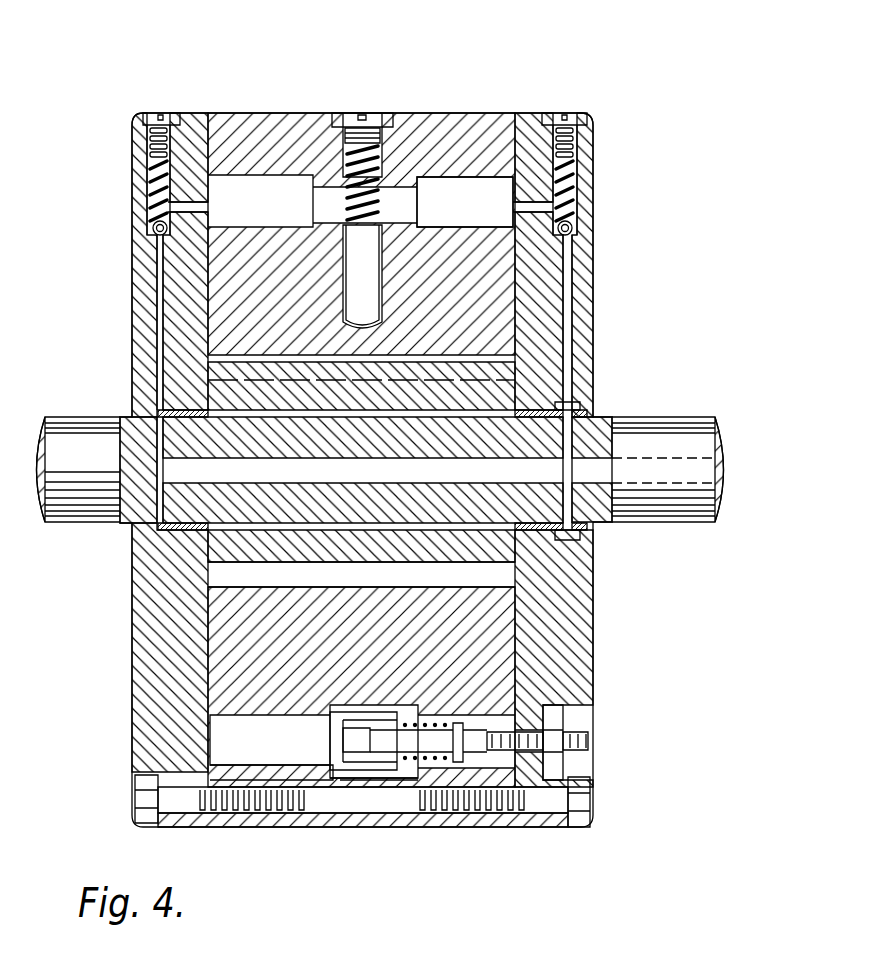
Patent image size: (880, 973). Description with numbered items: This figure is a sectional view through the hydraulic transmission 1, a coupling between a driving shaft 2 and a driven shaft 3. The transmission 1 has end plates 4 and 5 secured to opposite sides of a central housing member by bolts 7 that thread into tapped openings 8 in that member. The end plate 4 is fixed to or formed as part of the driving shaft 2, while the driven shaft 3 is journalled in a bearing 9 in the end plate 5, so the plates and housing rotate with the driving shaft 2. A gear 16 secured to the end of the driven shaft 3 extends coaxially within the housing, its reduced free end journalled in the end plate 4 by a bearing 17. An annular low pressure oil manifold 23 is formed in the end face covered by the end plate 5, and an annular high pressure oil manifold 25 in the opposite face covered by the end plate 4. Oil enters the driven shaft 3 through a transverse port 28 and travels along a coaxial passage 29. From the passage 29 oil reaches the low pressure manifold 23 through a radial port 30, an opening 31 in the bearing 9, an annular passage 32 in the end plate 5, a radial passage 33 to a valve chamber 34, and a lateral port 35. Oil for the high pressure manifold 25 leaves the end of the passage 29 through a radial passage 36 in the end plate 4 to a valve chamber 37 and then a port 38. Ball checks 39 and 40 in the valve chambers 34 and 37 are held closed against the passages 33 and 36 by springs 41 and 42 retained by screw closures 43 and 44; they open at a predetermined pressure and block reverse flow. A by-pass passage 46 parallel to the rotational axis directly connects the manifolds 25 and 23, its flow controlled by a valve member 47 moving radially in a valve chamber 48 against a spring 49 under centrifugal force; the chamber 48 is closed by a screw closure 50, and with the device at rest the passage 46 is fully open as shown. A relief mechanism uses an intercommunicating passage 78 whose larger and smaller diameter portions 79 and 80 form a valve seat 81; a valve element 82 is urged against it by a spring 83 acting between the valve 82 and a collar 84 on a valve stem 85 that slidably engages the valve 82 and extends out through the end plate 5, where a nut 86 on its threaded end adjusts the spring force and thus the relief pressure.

The transmission 1 is at (434, 110).
The driving shaft 2 is at (63, 523).
The driven shaft 3 is at (685, 417).
The end plate 4 is at (130, 340).
The end plate 5 is at (594, 292).
The bolts 7 is at (147, 806).
The tapped openings 8 is at (290, 823).
The bearing 9 is at (594, 538).
The gear 16 is at (413, 563).
The bearing 17 is at (173, 528).
The low pressure oil manifold 23 is at (438, 209).
The high pressure oil manifold 25 is at (245, 209).
The transverse port 28 is at (218, 736).
The passage 29 is at (380, 481).
The radial port 30 is at (568, 445).
The opening 31 is at (580, 412).
The annular passage 32 is at (572, 405).
The passage 33 is at (568, 340).
The valve chamber 34 is at (572, 213).
The port 35 is at (530, 207).
The passage 36 is at (158, 295).
The valve chamber 37 is at (150, 190).
The port 38 is at (190, 205).
The ball check 39 is at (575, 240).
The ball check 40 is at (155, 226).
The spring 41 is at (570, 180).
The spring 42 is at (155, 172).
The screw closure 43 is at (585, 113).
The screw closure 44 is at (150, 112).
The by-pass port 46 is at (325, 207).
The valve member 47 is at (353, 288).
The valve chamber 48 is at (385, 135).
The spring 49 is at (384, 216).
The screw closure 50 is at (374, 113).
The intercommunicating passage 78 is at (360, 772).
The passage portion 79 is at (397, 777).
The passage portion 80 is at (322, 768).
The valve seat 81 is at (330, 718).
The valve element 82 is at (333, 740).
The spring 83 is at (488, 758).
The collar 84 is at (455, 742).
The valve stem 85 is at (633, 740).
The nut 86 is at (560, 720).